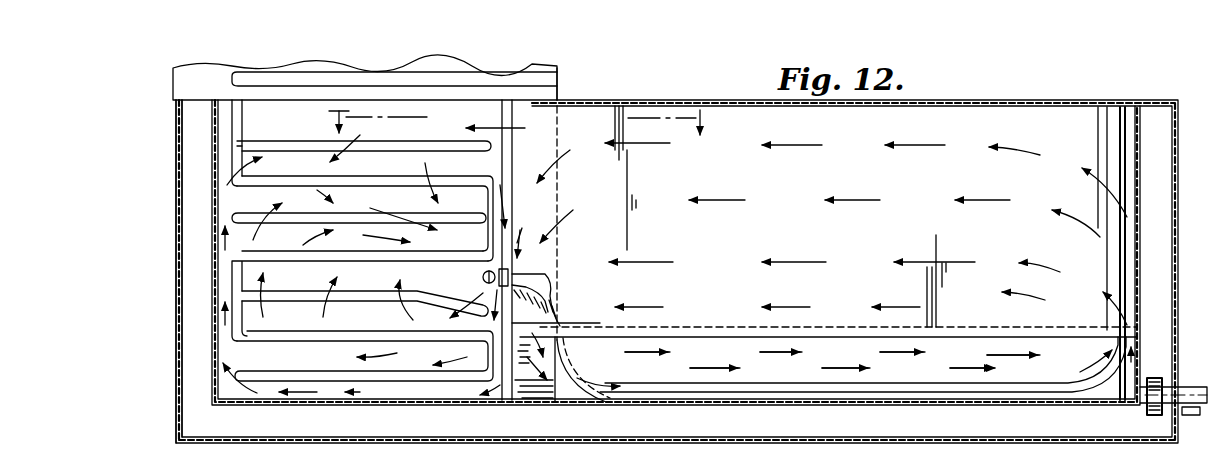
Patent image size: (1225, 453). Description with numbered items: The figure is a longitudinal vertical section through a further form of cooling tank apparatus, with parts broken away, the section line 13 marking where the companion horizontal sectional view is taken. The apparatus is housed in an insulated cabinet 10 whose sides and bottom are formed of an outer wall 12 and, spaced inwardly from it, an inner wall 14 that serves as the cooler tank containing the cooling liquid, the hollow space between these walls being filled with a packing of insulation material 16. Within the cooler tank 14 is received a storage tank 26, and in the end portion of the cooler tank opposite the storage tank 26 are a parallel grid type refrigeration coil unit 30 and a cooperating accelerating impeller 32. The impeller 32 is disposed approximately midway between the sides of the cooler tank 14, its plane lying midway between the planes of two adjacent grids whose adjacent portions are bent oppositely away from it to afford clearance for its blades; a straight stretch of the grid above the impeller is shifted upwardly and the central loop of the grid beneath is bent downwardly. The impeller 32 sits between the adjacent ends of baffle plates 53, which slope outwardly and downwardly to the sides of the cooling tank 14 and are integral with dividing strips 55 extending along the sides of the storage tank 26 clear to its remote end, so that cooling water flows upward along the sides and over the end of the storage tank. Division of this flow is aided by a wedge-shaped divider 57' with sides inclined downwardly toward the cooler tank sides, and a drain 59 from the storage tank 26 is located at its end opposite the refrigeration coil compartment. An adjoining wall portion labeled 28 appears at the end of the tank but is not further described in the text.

The insulated cabinet 10 is at (176, 398).
The outer wall 12 is at (181, 303).
The section line 13— 13 is at (521, 125).
The inner wall 14 is at (265, 404).
The insulation material 16 is at (975, 433).
The storage tank 26 is at (886, 238).
The rear wall 28 is at (1130, 247).
The refrigeration coil unit 30 is at (232, 216).
The impeller 32 is at (486, 272).
The baffle plates 53 is at (540, 272).
The dividing strips 55 is at (718, 326).
The wedge-shaped divider 57' is at (562, 369).
The drain 59 is at (1188, 390).